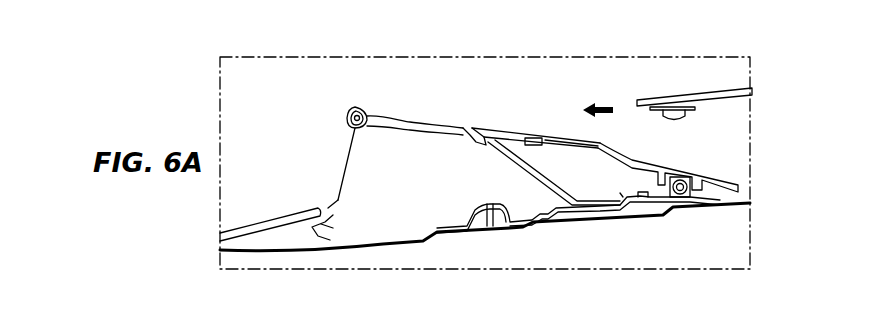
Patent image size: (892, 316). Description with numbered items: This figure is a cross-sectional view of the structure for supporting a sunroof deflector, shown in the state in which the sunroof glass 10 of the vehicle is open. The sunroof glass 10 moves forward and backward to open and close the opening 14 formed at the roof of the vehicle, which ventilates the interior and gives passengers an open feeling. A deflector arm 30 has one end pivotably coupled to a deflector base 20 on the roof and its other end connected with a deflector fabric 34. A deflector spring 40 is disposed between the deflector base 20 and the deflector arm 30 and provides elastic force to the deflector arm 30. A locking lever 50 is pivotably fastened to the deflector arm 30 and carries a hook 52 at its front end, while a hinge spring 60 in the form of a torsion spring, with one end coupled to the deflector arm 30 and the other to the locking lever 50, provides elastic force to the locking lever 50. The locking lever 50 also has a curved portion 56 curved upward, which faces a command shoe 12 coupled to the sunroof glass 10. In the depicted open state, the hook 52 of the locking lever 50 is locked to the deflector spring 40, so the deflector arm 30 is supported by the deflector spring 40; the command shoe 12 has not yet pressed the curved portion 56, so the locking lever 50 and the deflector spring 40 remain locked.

The sunroof glass 10 is at (712, 90).
The command shoe 12 is at (687, 115).
The opening 14 is at (395, 197).
The deflector base 20 is at (562, 210).
The deflector arm 30 is at (413, 120).
The deflector fabric 34 is at (348, 143).
The deflector spring 40 is at (538, 182).
The locking lever 50 is at (562, 133).
The hook 52 is at (474, 128).
The curved portion 56 is at (606, 142).
The hinge spring 60 is at (530, 137).